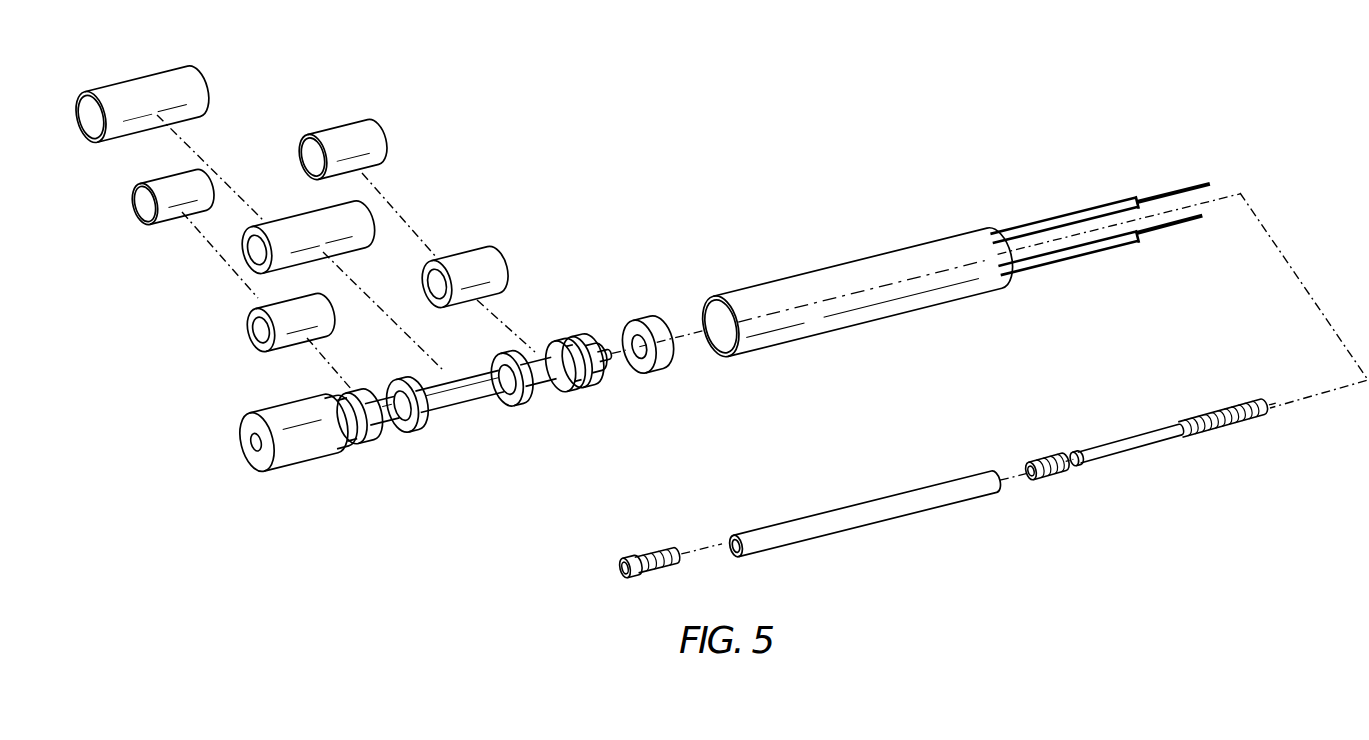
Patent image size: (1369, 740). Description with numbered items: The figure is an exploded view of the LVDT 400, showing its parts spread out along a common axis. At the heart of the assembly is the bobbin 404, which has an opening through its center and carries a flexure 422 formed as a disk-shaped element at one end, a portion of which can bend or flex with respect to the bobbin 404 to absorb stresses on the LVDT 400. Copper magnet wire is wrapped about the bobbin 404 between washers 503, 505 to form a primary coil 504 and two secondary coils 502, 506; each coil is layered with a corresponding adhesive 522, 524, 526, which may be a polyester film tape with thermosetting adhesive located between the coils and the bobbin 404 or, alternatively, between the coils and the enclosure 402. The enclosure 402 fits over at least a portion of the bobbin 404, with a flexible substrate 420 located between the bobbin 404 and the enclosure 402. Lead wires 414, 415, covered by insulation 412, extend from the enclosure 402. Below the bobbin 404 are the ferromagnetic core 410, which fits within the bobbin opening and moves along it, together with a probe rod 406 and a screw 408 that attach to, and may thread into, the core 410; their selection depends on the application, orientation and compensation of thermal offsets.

The LVDT 400 is at (850, 125).
The enclosure 402 is at (915, 306).
The bobbin 404 is at (323, 457).
The probe rod 406 is at (1135, 452).
The screw 408 is at (650, 573).
The ferromagnetic core 410 is at (945, 502).
The insulation 412 is at (1073, 214).
The lead wire 414 is at (1178, 230).
The lead wire 415 is at (1178, 191).
The flexible substrate 420 is at (660, 368).
The flexure 422 is at (262, 462).
The secondary coil 502 is at (325, 332).
The washer 503 is at (425, 428).
The primary coil 504 is at (350, 252).
The washer 505 is at (525, 405).
The secondary coil 506 is at (498, 290).
The adhesive 522 is at (184, 216).
The adhesive 524 is at (188, 116).
The adhesive 526 is at (378, 166).